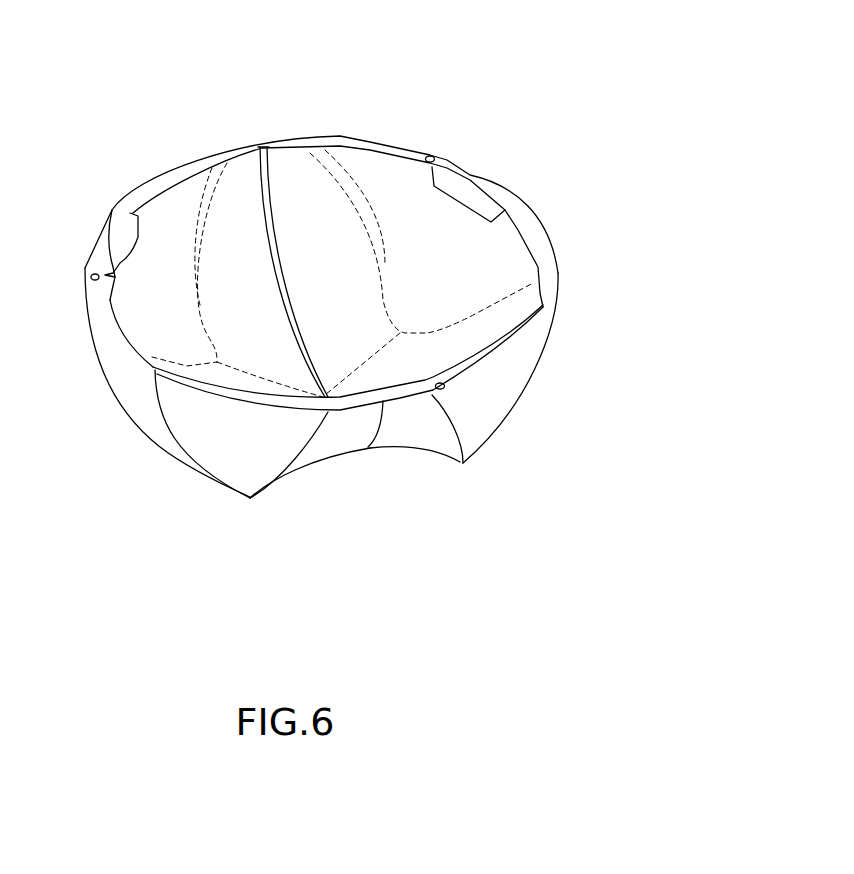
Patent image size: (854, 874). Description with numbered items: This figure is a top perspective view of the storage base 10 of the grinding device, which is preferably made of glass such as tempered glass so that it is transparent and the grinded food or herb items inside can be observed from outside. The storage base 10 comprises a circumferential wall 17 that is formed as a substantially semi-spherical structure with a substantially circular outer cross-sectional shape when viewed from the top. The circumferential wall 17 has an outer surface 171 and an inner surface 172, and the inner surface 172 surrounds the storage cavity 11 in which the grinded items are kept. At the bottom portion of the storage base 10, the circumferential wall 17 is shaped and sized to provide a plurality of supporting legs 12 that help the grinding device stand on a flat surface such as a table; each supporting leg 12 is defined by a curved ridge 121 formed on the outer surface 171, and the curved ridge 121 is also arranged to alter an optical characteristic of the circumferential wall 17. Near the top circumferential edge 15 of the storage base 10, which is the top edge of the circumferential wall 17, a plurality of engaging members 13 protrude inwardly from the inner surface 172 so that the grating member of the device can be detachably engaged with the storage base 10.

The storage base 10 is at (460, 513).
The storage cavity 11 is at (310, 203).
The supporting leg 12 is at (447, 431).
The curved ridge 121 is at (442, 413).
The engaging member 13 is at (467, 193).
The top circumferential edge 15 is at (180, 168).
The circumferential wall 17 is at (523, 360).
The outer surface 171 is at (240, 460).
The inner surface 172 is at (490, 260).